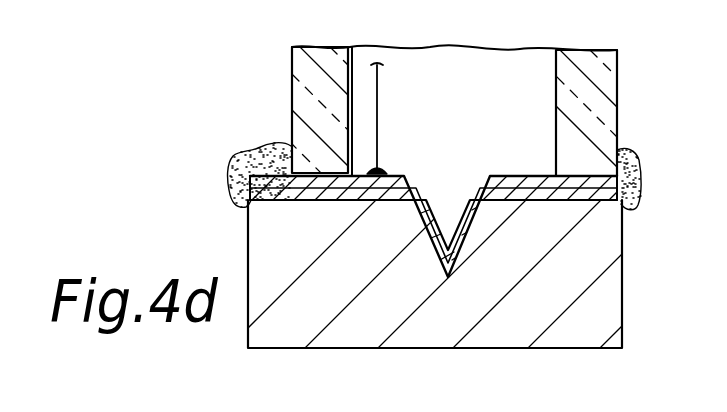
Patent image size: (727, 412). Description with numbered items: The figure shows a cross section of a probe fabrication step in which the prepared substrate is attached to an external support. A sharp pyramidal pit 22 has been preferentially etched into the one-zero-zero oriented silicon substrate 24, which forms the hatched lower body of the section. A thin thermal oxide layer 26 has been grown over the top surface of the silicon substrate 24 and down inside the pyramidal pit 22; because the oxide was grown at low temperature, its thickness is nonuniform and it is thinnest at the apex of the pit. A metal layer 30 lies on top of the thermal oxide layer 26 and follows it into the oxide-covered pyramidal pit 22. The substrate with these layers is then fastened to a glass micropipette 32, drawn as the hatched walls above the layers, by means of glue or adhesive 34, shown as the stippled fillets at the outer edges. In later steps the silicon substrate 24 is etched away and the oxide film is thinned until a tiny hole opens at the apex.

The pyramidal pit 22 is at (441, 203).
The silicon substrate 24 is at (433, 323).
The thermal oxide layer 26 is at (420, 176).
The metal layer 30 is at (517, 175).
The glass micropipette 32 is at (292, 68).
The adhesive 34 is at (268, 148).